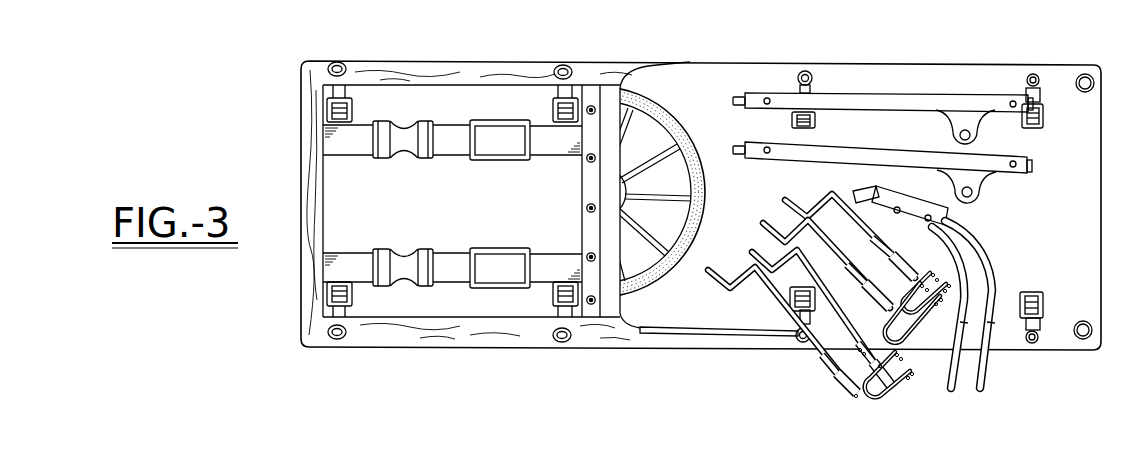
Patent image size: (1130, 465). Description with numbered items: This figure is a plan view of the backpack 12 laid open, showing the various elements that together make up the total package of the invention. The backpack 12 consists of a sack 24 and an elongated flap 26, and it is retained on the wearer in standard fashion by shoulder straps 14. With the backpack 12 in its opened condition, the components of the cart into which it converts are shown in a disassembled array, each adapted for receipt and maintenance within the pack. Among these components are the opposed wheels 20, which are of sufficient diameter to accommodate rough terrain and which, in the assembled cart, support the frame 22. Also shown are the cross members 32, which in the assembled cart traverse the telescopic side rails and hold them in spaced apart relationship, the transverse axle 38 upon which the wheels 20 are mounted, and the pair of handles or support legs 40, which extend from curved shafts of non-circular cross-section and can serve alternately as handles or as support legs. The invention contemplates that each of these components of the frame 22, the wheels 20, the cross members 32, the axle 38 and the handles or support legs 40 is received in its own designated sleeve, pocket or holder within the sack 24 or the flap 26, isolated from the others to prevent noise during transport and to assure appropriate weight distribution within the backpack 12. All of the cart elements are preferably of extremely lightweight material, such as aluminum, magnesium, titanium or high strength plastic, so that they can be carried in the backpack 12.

The backpack 12 is at (487, 63).
The shoulder straps 14 is at (447, 130).
The wheels 20 is at (662, 102).
The frame 22 is at (907, 93).
The sack 24 is at (358, 181).
The elongated flap 26 is at (990, 73).
The cross members 32 is at (897, 380).
The axle 38 is at (770, 334).
The handles or support legs 40 is at (983, 238).